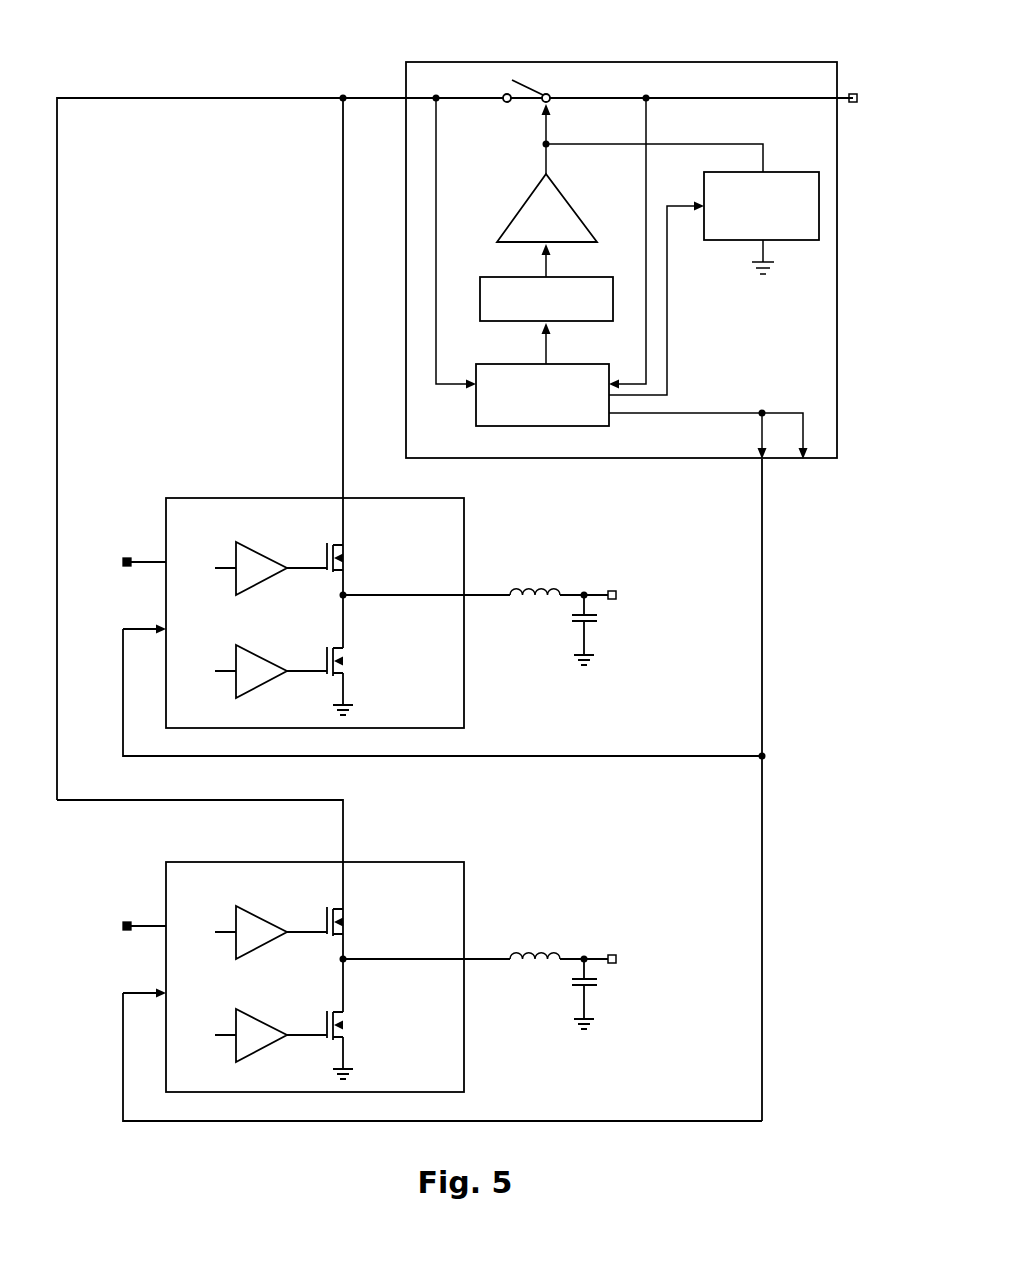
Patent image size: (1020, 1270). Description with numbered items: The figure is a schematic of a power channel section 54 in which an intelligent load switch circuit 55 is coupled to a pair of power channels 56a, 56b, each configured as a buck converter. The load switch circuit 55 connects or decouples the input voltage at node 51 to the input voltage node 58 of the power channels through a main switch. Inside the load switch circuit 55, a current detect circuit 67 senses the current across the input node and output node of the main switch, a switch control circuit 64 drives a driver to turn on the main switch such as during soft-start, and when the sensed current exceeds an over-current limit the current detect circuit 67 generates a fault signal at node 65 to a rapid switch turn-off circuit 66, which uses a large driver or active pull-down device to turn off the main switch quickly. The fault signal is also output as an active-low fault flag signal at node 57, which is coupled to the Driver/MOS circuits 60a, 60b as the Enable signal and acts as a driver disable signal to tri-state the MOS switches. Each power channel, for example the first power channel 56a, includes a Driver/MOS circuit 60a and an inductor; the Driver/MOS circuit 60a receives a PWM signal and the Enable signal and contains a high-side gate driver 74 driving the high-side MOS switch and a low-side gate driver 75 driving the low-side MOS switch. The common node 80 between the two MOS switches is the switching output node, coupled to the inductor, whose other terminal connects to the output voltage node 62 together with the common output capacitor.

The power channel section 54 is at (455, 584).
The input voltage node 58 is at (377, 98).
The load switch circuit 55 is at (727, 62).
The input voltage node 51 is at (813, 98).
The output voltage node 62 is at (519, 206).
The rapid switch turn-off circuit 66 is at (784, 172).
The fault signal node 65 is at (667, 318).
The switch control circuit 64 is at (580, 322).
The current detect circuit 67 is at (512, 427).
The fault flag signal node 57 is at (762, 528).
The power channel 56a is at (164, 463).
The power channel 56b is at (164, 841).
The Driver/MOS circuit 60a is at (430, 498).
The Driver/MOS circuit 60b is at (430, 862).
The high-side gate driver 74 is at (253, 552).
The low-side gate driver 75 is at (253, 655).
The common node 80 is at (410, 597).